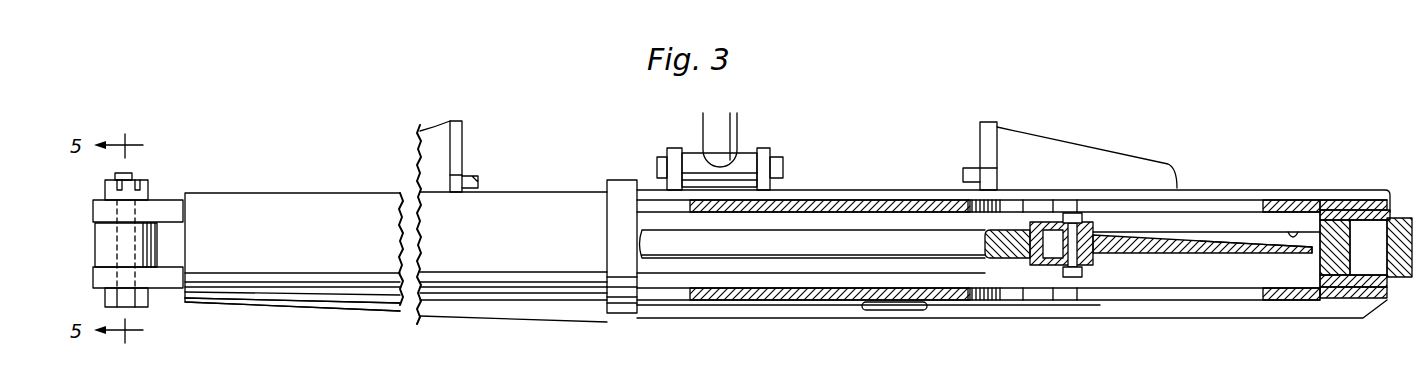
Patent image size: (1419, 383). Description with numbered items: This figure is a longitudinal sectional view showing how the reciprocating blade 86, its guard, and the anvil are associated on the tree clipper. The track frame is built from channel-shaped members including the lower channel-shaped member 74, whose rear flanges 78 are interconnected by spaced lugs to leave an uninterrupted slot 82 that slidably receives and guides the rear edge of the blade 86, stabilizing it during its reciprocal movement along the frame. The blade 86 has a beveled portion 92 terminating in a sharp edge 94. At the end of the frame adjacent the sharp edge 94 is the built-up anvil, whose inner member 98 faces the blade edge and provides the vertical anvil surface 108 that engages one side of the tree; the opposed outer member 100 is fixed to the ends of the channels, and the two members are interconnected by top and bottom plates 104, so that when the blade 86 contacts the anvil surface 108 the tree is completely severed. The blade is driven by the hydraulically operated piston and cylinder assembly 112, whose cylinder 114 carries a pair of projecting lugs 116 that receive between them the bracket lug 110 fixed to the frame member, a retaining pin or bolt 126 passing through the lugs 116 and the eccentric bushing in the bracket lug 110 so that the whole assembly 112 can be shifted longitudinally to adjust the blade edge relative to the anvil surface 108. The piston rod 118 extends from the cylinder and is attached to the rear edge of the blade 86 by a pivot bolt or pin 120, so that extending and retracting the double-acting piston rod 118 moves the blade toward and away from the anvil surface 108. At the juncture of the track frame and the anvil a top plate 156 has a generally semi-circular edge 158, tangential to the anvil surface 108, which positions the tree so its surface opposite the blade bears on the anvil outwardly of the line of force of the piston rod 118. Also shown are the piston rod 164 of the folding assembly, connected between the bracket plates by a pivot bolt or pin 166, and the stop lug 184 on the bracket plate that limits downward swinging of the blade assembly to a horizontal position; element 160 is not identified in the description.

The lower channel-shaped member 74 is at (808, 300).
The rear flanges 78 is at (1190, 227).
The slot 82 is at (1293, 238).
The blade 86 is at (1133, 245).
The beveled portion 92 is at (1263, 241).
The sharp edge 94 is at (1310, 253).
The inner member 98 is at (1342, 256).
The outer member 100 is at (1400, 263).
The top and bottom plates 104 is at (1375, 210).
The anvil surface 108 is at (1320, 268).
The bracket lug 110 is at (150, 245).
The piston and cylinder assembly 112 is at (293, 192).
The cylinder 114 is at (327, 278).
The projecting lugs 116 is at (156, 208).
The piston rod 118 is at (743, 245).
The pivot bolt or pin 120 is at (1072, 277).
The retaining pin or bolt 126 is at (128, 182).
The top plate 156 is at (1283, 200).
The semi-circular edge 158 is at (1030, 205).
The mounting bracket 160 is at (763, 152).
The piston rod 164 is at (716, 128).
The pivot bolt or pin 166 is at (784, 168).
The stop lug 184 is at (473, 180).